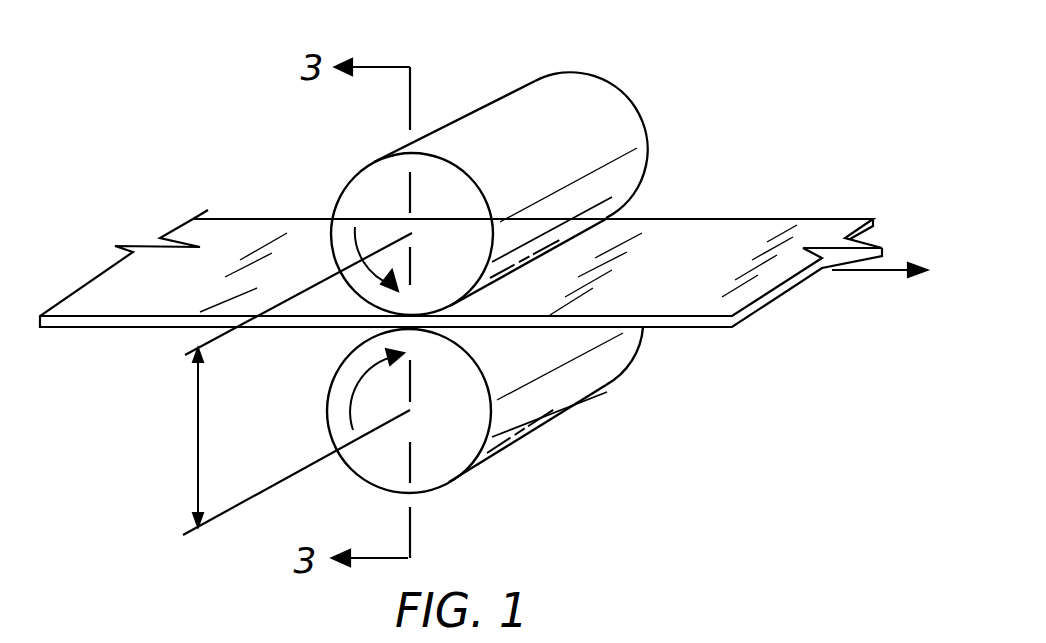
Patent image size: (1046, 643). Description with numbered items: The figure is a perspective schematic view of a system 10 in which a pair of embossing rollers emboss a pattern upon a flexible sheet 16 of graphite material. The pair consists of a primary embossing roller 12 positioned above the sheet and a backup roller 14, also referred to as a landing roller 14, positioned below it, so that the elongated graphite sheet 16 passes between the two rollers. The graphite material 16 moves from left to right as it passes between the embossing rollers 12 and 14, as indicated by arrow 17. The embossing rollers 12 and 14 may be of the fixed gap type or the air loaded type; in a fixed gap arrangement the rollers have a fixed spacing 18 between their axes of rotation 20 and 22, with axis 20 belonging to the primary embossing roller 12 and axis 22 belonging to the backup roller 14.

The system 10 is at (714, 74).
The primary embossing roller 12 is at (557, 82).
The backup roller 14 is at (515, 422).
The flexible sheet 16 is at (693, 233).
The arrow 17 is at (882, 274).
The fixed spacing 18 is at (198, 430).
The axis of rotation 20 is at (212, 344).
The axis of rotation 22 is at (228, 512).